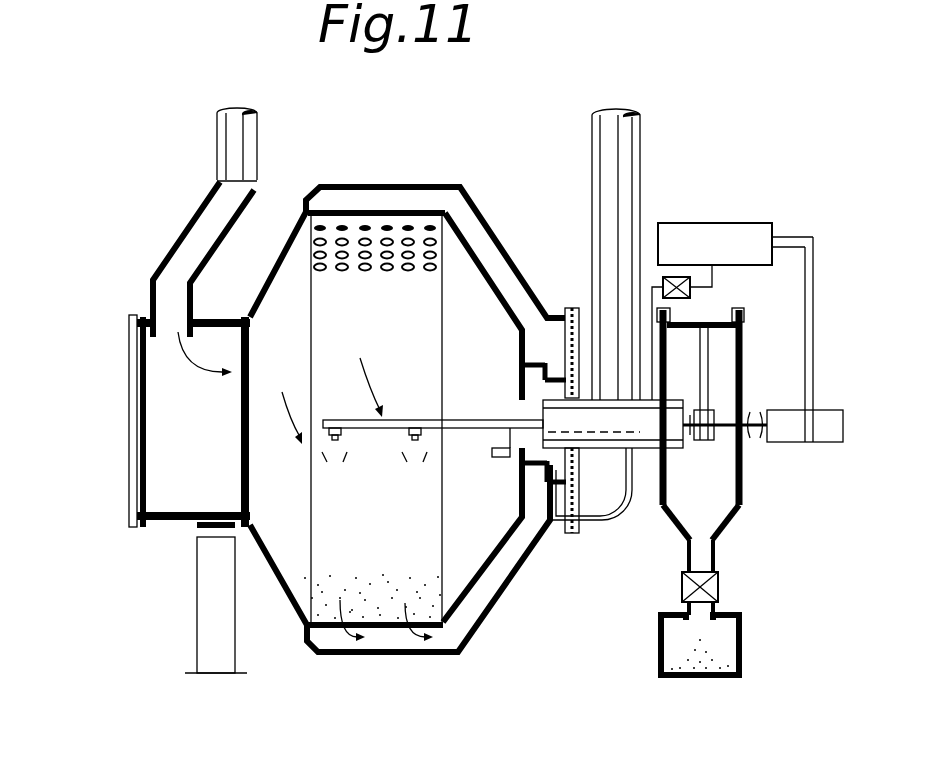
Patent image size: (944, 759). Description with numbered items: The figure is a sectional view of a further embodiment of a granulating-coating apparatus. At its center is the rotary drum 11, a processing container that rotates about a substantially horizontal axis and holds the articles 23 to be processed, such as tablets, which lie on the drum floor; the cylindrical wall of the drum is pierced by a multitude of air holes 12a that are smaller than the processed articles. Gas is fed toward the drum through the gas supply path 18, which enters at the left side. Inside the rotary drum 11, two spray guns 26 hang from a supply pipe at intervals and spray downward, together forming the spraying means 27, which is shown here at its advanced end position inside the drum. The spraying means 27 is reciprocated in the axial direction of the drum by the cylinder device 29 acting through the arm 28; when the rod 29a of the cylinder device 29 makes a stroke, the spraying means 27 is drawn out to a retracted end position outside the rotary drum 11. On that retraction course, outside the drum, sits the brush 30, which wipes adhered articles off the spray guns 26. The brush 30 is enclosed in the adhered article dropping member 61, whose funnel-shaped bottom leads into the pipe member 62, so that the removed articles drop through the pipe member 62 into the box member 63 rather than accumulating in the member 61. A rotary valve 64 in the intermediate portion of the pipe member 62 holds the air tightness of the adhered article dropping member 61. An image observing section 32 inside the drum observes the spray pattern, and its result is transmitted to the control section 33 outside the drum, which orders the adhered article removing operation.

The rotary drum 11 is at (472, 246).
The air holes 12a is at (397, 228).
The gas supply path 18 is at (198, 232).
The articles to be processed 23 is at (320, 588).
The spray guns 26 is at (414, 442).
The spraying means 27 is at (399, 420).
The arm 28 is at (815, 292).
The cylinder device 29 is at (745, 228).
The rod 29a is at (802, 235).
The brush 30 is at (705, 350).
The image observing section 32 is at (502, 458).
The control section 33 is at (692, 290).
The adhered article dropping member 61 is at (744, 470).
The pipe member 62 is at (716, 556).
The box member 63 is at (656, 628).
The rotary valve 64 is at (720, 590).